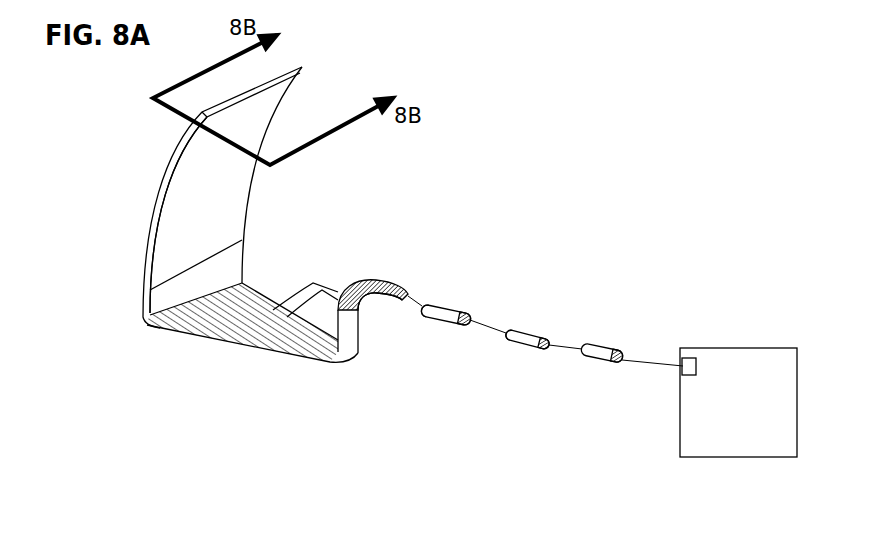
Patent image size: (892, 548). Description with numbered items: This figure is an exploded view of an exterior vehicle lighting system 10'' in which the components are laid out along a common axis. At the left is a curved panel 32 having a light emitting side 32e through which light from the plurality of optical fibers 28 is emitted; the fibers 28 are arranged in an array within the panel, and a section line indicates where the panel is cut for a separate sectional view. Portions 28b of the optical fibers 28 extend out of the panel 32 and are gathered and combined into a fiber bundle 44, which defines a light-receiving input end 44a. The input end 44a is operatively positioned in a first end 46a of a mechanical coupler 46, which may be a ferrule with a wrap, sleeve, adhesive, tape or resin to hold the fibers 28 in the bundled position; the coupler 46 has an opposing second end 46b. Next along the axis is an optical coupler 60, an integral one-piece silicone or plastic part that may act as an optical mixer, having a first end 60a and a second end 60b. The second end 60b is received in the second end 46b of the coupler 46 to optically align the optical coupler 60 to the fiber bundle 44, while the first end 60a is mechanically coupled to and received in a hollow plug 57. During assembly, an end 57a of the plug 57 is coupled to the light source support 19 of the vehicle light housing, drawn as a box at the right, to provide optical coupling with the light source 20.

The vehicle lighting system 10'' is at (545, 271).
The light source support 19 is at (740, 347).
The light source 20 is at (682, 368).
The optical fibers 28 is at (248, 330).
The portions of the optical fibers 28b is at (303, 293).
The panel 32 is at (148, 178).
The light emitting side 32e is at (143, 243).
The fiber bundle 44 is at (392, 280).
The input end 44a is at (403, 301).
The mechanical coupler 46 is at (439, 322).
The first end of the mechanical coupler 46a is at (424, 302).
The second end of the mechanical coupler 46b is at (472, 325).
The hollow plug 57 is at (607, 346).
The end of the plug 57a is at (622, 357).
The optical coupler 60 is at (529, 347).
The first end of the optical coupler 60a is at (548, 338).
The second end of the optical coupler 60b is at (510, 331).